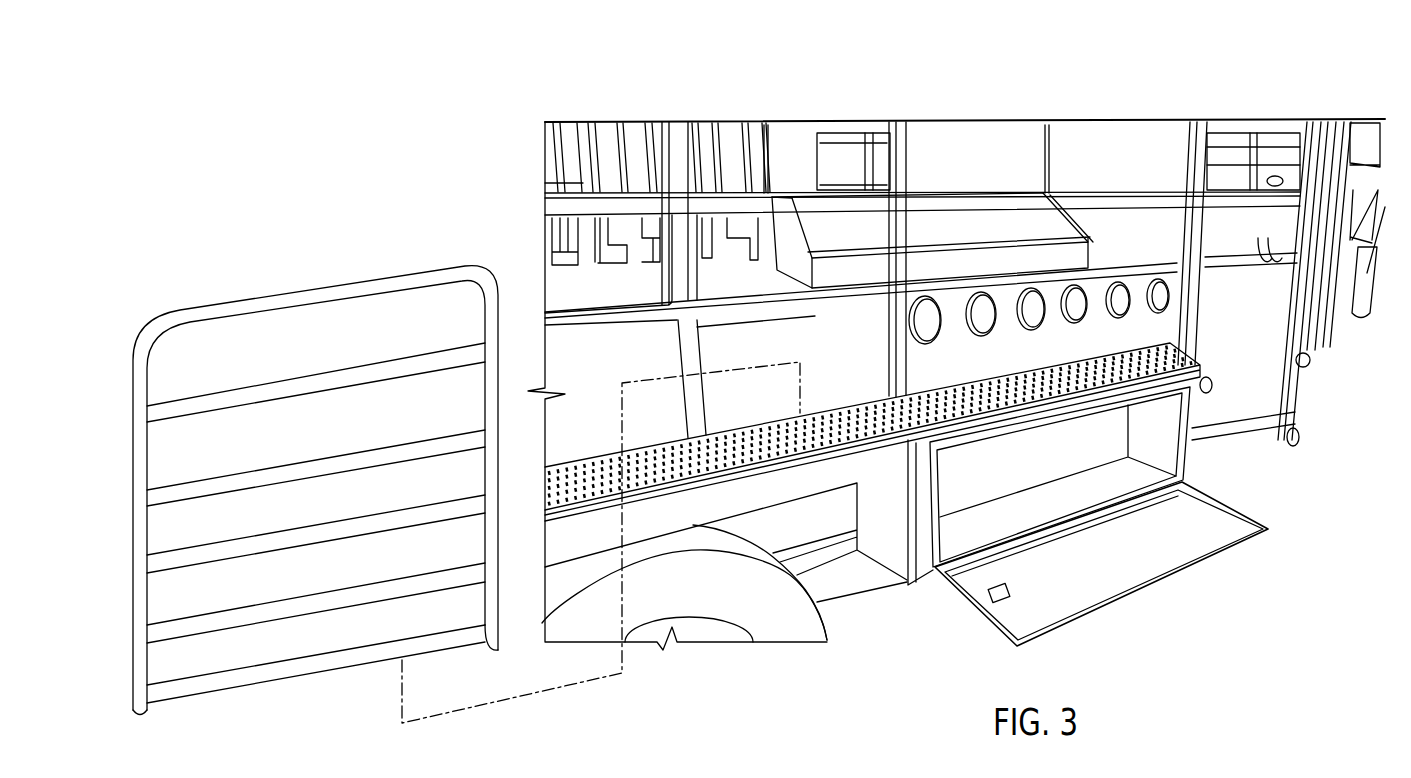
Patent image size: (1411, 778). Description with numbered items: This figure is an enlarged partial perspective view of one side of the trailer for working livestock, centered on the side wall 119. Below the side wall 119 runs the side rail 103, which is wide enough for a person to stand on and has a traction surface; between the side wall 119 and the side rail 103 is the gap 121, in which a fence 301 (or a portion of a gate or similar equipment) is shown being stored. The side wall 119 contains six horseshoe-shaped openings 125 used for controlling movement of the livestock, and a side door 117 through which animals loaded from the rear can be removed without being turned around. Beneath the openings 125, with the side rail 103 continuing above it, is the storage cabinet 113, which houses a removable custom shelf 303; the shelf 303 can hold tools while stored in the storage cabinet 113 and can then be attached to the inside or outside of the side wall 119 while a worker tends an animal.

The fence 301 is at (391, 273).
The gap 121 is at (606, 452).
The side wall 119 is at (677, 207).
The removable custom shelf 303 is at (1065, 228).
The openings 125 is at (1137, 322).
The side door 117 is at (1243, 320).
The storage cabinet 113 is at (1138, 553).
The side rail 103 is at (692, 473).